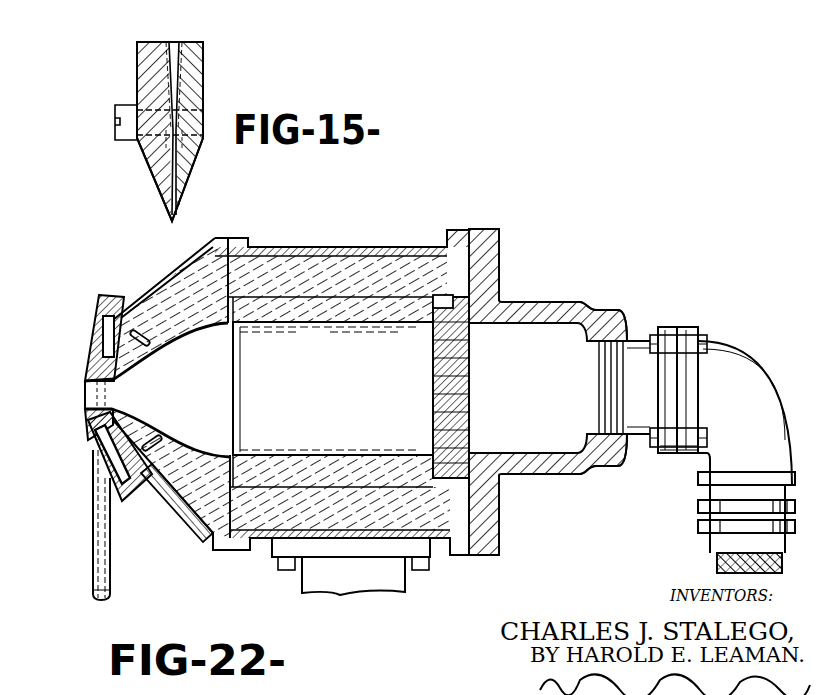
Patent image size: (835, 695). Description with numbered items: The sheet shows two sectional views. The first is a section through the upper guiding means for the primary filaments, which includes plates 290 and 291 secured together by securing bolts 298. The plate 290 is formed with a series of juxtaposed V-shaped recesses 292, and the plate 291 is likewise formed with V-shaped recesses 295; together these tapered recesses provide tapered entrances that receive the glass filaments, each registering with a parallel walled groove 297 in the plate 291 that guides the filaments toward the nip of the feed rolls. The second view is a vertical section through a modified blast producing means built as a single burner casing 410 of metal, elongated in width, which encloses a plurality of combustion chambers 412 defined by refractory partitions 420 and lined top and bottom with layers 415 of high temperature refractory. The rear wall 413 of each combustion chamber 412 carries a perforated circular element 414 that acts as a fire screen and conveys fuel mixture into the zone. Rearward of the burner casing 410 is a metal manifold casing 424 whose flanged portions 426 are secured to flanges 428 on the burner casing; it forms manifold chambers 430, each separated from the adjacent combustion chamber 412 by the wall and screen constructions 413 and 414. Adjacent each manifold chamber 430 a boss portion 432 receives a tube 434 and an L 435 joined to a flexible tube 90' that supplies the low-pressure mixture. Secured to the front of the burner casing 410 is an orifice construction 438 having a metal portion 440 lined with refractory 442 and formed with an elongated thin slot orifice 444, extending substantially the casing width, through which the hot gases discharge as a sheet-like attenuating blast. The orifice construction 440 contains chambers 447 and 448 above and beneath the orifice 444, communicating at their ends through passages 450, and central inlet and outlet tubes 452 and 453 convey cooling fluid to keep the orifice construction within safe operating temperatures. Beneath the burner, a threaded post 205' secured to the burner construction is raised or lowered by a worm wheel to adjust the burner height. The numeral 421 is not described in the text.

In FIG. 15, the plate 290 is at (203, 93).
In FIG. 15, the plate 291 is at (138, 48).
In FIG. 15, the V-shaped recesses 292 is at (183, 66).
In FIG. 15, the V-shaped recesses 295 is at (185, 67).
In FIG. 15, the parallel walled groove 297 is at (175, 182).
In FIG. 15, the securing bolts 298 is at (115, 106).
In FIG. 22, the burner casing 410 is at (405, 223).
In FIG. 22, the combustion chambers 412 is at (375, 394).
In FIG. 22, the rear wall 413 is at (473, 258).
In FIG. 22, the circular elements 414 is at (470, 349).
In FIG. 22, the refractory layers 415 is at (305, 292).
In FIG. 22, the partitions 420 is at (236, 385).
In FIG. 22, the chamber end wall 421 is at (230, 407).
In FIG. 22, the manifold casing 424 is at (570, 303).
In FIG. 22, the flanged portions 426 is at (488, 259).
In FIG. 22, the flanges 428 is at (450, 296).
In FIG. 22, the manifold chambers 430 is at (558, 398).
In FIG. 22, the boss portion 432 is at (622, 329).
In FIG. 22, the tube 434 is at (636, 447).
In FIG. 22, the L 435 is at (719, 350).
In FIG. 22, the orifice construction 438 is at (156, 509).
In FIG. 22, the metal portion 440 is at (102, 502).
In FIG. 22, the refractory lining 442 is at (262, 436).
In FIG. 22, the slot orifice 444 is at (88, 405).
In FIG. 22, the chamber 447 is at (102, 322).
In FIG. 22, the chamber 448 is at (113, 468).
In FIG. 22, the passages 450 is at (88, 366).
In FIG. 22, the inlet tube 452 is at (100, 582).
In FIG. 22, the outlet tube 453 is at (105, 537).
In FIG. 22, the flexible tube 90' is at (704, 555).
In FIG. 22, the post 205' is at (382, 575).